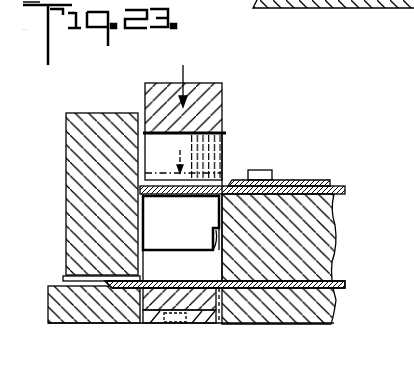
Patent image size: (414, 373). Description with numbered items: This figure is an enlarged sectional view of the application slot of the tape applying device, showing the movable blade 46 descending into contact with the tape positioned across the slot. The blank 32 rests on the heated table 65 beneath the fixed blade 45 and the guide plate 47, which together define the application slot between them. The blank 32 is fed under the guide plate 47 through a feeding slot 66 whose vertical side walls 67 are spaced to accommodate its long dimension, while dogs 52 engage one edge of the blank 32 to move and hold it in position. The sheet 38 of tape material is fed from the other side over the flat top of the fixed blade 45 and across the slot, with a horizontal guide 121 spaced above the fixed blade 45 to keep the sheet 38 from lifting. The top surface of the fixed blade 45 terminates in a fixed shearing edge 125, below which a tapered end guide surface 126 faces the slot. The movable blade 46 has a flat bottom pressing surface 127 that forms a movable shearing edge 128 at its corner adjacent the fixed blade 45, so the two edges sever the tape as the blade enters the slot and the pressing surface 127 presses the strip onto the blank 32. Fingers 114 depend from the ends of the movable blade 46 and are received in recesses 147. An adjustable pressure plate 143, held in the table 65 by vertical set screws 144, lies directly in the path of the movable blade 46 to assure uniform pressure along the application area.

The blank 32 is at (341, 282).
The sheet of tape material 38 is at (341, 189).
The fixed blade 45 is at (320, 234).
The movable blade 46 is at (201, 93).
The guide plate 47 is at (111, 113).
The dog 52 is at (118, 282).
The table 65 is at (50, 302).
The feeding slot 66 is at (63, 279).
The vertical side wall 67 is at (74, 275).
The finger 114 is at (186, 243).
The horizontal guide 121 is at (293, 181).
The fixed shearing edge 125 is at (218, 199).
The end guide surface 126 is at (203, 256).
The pressing surface 127 is at (175, 137).
The movable shearing edge 128 is at (224, 133).
The pressure plate 143 is at (163, 314).
The vertical set screw 144 is at (178, 320).
The recess 147 is at (116, 330).